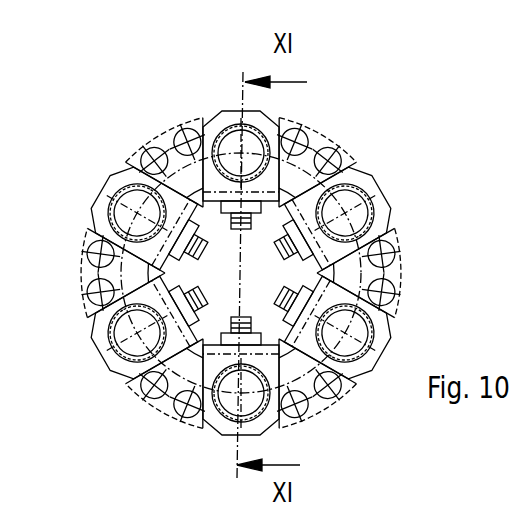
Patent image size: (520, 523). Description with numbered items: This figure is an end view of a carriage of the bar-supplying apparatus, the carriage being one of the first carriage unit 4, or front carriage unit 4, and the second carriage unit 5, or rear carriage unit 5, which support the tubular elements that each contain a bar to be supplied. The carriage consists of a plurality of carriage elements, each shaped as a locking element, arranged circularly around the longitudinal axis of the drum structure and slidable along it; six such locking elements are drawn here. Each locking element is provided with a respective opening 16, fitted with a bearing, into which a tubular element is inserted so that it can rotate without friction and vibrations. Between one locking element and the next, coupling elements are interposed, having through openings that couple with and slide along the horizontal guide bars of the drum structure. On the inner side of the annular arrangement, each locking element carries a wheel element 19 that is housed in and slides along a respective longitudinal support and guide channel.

The first carriage unit 4 is at (361, 158).
The second carriage unit 5 is at (330, 146).
The opening 16 is at (110, 335).
The wheel element 19 is at (213, 245).